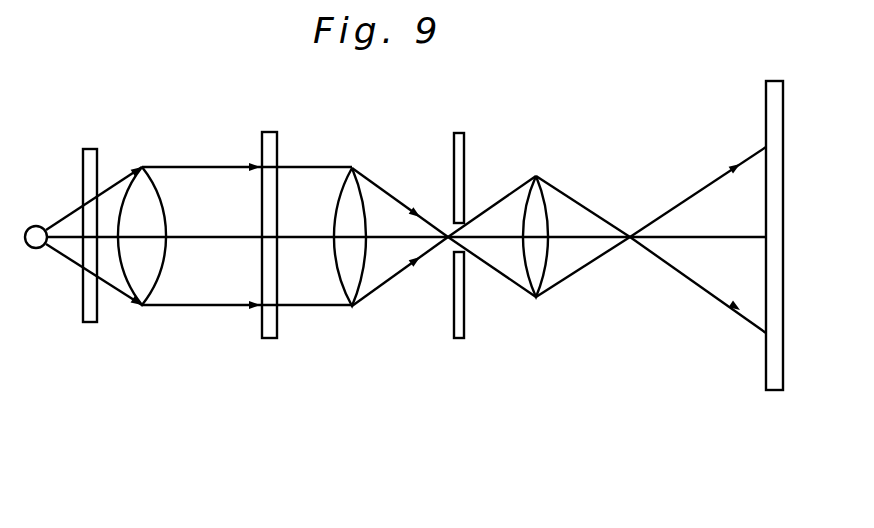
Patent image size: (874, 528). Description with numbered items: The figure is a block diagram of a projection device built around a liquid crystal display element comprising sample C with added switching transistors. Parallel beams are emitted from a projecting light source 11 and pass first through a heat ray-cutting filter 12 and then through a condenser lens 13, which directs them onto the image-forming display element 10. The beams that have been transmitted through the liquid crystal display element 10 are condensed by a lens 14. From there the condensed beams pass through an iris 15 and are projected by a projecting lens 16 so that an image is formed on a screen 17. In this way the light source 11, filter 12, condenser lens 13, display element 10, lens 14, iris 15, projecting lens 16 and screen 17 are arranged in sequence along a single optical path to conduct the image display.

The image-forming display element 10 is at (273, 339).
The projecting light source 11 is at (34, 249).
The heat ray-cutting filter 12 is at (96, 323).
The condenser lens 13 is at (146, 283).
The lens 14 is at (353, 288).
The iris 15 is at (459, 339).
The projecting lens 16 is at (533, 283).
The screen 17 is at (772, 391).